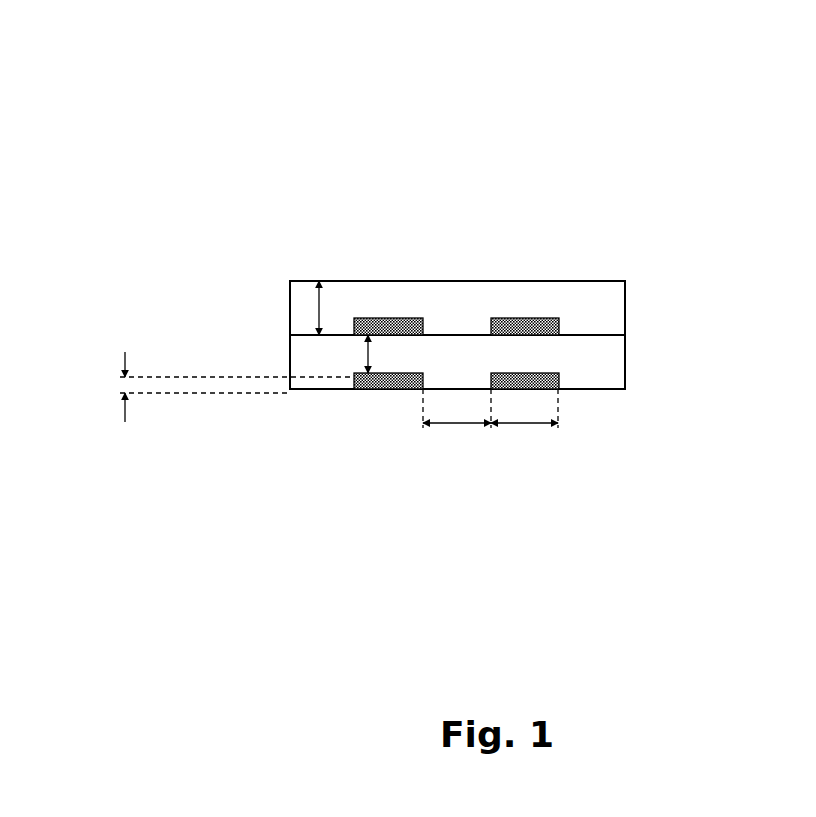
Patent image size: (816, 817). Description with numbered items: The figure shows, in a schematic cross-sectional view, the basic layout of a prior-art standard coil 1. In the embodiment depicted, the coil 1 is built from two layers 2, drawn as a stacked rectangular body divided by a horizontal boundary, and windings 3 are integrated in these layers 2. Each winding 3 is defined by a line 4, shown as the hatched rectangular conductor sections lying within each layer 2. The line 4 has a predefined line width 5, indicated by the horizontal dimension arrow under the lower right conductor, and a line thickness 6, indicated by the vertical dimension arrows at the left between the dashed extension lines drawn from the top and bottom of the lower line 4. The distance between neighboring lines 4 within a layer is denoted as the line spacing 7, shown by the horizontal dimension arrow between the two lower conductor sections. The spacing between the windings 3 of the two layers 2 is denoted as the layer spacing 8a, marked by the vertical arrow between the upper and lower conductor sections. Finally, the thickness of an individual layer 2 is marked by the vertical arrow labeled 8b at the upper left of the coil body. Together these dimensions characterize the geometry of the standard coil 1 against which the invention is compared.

The standard coil 1 is at (457, 208).
The layer 2 is at (587, 305).
The winding 3 is at (559, 383).
The line 4 is at (525, 381).
The line width 5 is at (527, 425).
The line thickness 6 is at (123, 390).
The line spacing 7 is at (457, 425).
The layer spacing 8a is at (368, 353).
The layer thickness 8b is at (319, 302).